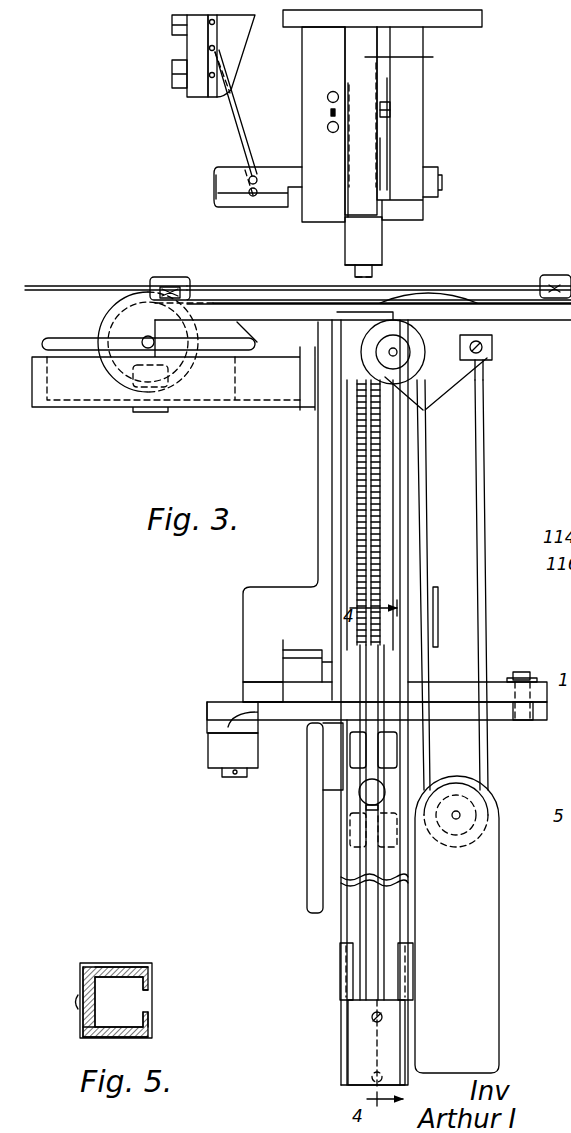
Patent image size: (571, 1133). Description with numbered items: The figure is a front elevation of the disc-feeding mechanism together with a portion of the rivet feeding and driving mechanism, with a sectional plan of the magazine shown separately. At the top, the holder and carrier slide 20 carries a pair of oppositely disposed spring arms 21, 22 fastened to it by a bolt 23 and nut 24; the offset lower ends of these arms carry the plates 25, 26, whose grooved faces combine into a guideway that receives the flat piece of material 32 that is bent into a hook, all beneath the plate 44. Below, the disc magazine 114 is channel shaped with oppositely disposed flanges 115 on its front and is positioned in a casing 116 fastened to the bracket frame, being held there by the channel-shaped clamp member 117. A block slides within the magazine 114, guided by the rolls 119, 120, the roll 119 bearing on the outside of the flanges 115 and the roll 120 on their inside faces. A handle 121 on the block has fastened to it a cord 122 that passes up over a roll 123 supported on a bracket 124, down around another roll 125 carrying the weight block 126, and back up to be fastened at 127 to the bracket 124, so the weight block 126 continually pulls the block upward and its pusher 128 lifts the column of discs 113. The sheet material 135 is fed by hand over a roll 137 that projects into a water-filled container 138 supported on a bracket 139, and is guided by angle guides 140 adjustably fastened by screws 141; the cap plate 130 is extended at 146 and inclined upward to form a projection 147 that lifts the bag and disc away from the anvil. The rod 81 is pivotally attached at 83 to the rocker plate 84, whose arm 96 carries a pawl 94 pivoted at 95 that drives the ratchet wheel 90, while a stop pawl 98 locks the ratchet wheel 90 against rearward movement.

In FIG. 3, the top plate 44 is at (480, 20).
In FIG. 3, the holder and carrier slide 20 is at (402, 122).
In FIG. 3, the spring arm 21 is at (380, 140).
In FIG. 3, the spring arm 22 is at (345, 157).
In FIG. 3, the bolt 23 is at (390, 108).
In FIG. 3, the nut 24 is at (332, 92).
In FIG. 3, the plate 25 is at (382, 236).
In FIG. 3, the plate 26 is at (350, 238).
In FIG. 3, the flat piece of material 32 is at (363, 268).
In FIG. 3, the cap plate 130 is at (232, 290).
In FIG. 3, the sheet material 135 is at (103, 288).
In FIG. 3, the roll 137 is at (115, 320).
In FIG. 3, the container 138 is at (60, 343).
In FIG. 3, the bracket 139 is at (283, 395).
In FIG. 3, the angle guides 140 is at (168, 282).
In FIG. 3, the screws 141 is at (181, 290).
In FIG. 3, the extension of cap plate 146 is at (455, 300).
In FIG. 3, the projection 147 is at (408, 296).
In FIG. 3, the casing 116 is at (332, 460).
In FIG. 5, the casing 116 is at (92, 968).
In FIG. 3, the flanges 115 is at (347, 482).
In FIG. 5, the flanges 115 is at (148, 983).
In FIG. 3, the magazine 114 is at (341, 503).
In FIG. 5, the magazine 114 is at (130, 972).
In FIG. 3, the discs 113 is at (360, 522).
In FIG. 3, the cord 122 is at (488, 450).
In FIG. 3, the roll 123 is at (415, 360).
In FIG. 3, the bracket 124 is at (484, 364).
In FIG. 3, the cord fastening point 127 is at (492, 347).
In FIG. 3, the pusher 128 is at (555, 597).
In FIG. 3, the stop pawl 98 is at (255, 690).
In FIG. 3, the ratchet wheel 90 is at (320, 710).
In FIG. 3, the pawl 94 is at (455, 698).
In FIG. 3, the pawl pivot 95 is at (521, 676).
In FIG. 3, the arm 96 is at (527, 713).
In FIG. 3, the rocker plate 84 is at (240, 710).
In FIG. 3, the pivot 83 is at (228, 727).
In FIG. 3, the rod 81 is at (218, 745).
In FIG. 3, the roll 119 is at (353, 752).
In FIG. 3, the roll 120 is at (355, 833).
In FIG. 3, the handle 121 is at (365, 790).
In FIG. 3, the roll 125 is at (475, 790).
In FIG. 3, the block 126 is at (490, 890).
In FIG. 3, the clamp member 117 is at (345, 970).
In FIG. 5, the clamp member 117 is at (90, 1037).